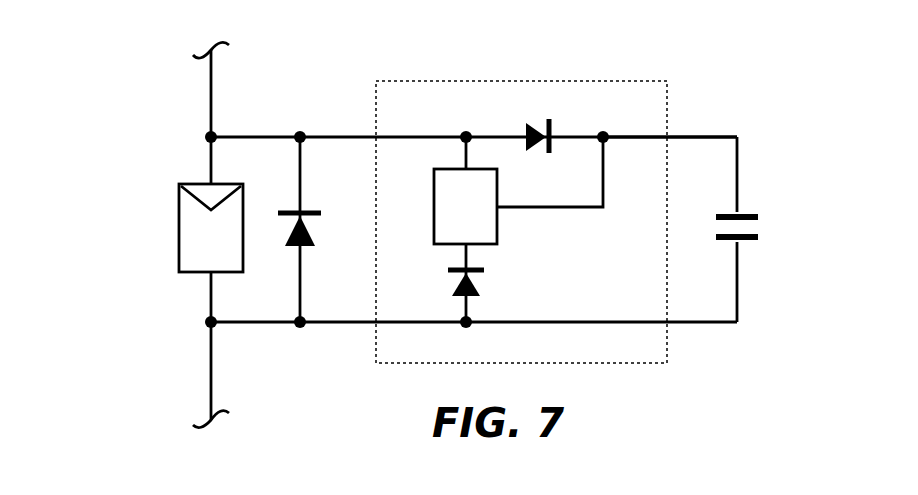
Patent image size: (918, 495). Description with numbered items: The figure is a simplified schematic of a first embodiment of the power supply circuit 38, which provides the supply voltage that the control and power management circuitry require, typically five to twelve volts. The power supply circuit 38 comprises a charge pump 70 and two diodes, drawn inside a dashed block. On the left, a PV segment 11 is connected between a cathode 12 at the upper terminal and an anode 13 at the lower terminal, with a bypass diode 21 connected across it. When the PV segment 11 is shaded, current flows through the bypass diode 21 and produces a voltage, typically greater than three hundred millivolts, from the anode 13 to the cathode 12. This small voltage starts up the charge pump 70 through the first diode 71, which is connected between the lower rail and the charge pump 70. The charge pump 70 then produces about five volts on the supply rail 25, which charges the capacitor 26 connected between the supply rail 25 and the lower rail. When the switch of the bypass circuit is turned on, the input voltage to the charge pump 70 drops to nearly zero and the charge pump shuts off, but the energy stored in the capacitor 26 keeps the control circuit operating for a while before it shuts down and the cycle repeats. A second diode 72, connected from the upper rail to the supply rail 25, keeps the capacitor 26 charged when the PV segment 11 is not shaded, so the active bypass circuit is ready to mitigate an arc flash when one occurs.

The PV segment 11 is at (179, 234).
The cathode 12 is at (210, 103).
The anode 13 is at (210, 365).
The bypass diode 21 is at (321, 211).
The supply rail 25 is at (667, 133).
The capacitor 26 is at (760, 216).
The power supply circuit 38 is at (410, 80).
The charge pump 70 is at (498, 247).
The first diode 71 is at (448, 272).
The second diode 72 is at (549, 153).